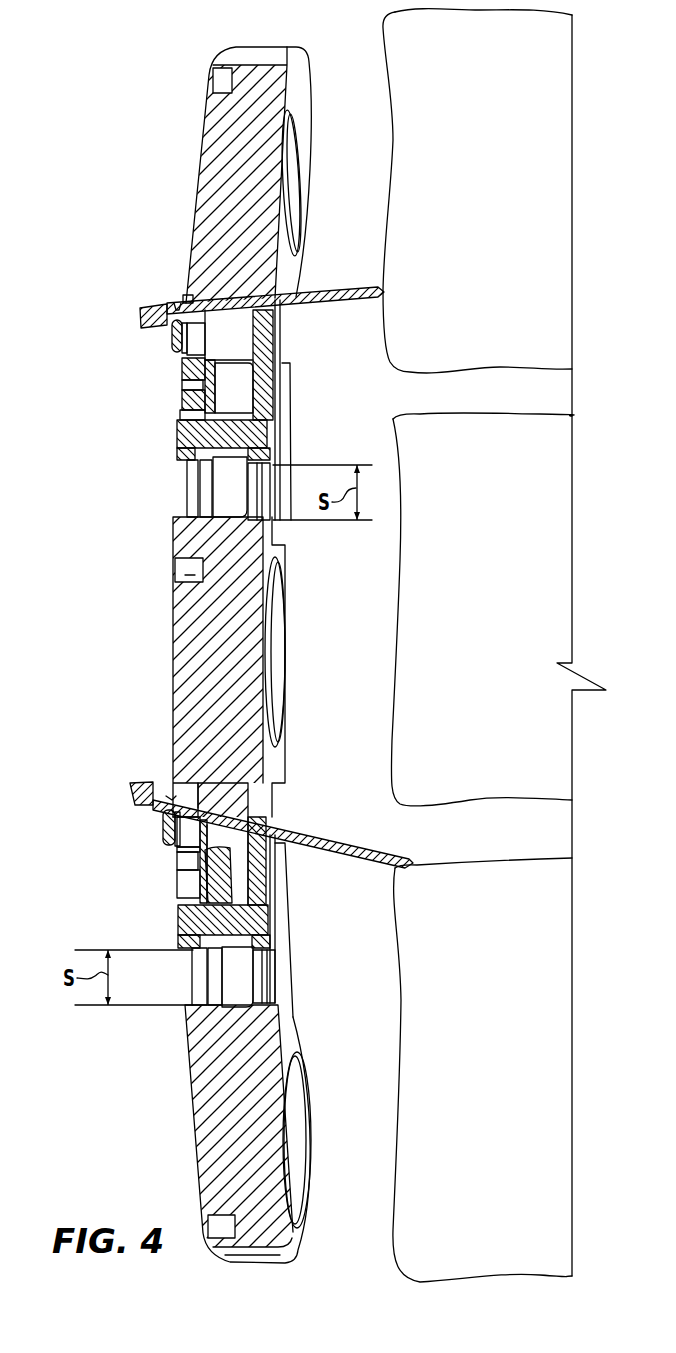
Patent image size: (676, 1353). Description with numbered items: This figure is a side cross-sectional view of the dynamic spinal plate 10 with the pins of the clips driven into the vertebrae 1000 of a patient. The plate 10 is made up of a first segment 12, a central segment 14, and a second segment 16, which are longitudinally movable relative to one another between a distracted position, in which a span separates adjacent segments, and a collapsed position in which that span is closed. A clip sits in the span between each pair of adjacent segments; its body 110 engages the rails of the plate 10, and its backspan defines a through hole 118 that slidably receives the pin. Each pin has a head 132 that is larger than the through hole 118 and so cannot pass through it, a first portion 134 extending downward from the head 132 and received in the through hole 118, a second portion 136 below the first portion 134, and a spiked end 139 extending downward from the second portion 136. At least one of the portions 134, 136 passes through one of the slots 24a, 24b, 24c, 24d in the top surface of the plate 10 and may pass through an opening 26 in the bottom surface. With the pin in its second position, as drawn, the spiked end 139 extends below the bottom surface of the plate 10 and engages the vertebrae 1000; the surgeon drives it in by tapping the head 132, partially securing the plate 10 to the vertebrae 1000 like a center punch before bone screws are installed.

The dynamic spinal plate 10 is at (226, 42).
The first segment 12 is at (202, 1100).
The central segment 14 is at (182, 638).
The second segment 16 is at (207, 170).
The slot 24a is at (187, 397).
The slot 24b is at (188, 370).
The slot 24c is at (198, 340).
The slot 24d is at (188, 293).
The opening 26 is at (263, 347).
The body 110 is at (175, 335).
The through hole 118 is at (173, 323).
The head 132 is at (137, 310).
The first portion 134 is at (172, 302).
The second portion 136 is at (308, 295).
The spiked end 139 is at (384, 291).
The vertebrae 1000 is at (492, 210).